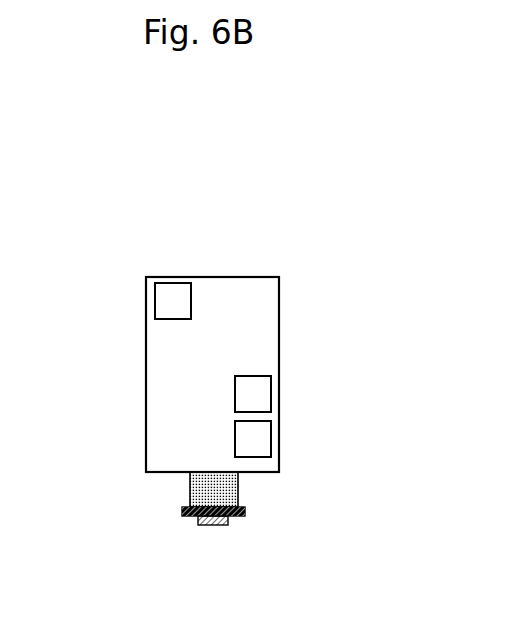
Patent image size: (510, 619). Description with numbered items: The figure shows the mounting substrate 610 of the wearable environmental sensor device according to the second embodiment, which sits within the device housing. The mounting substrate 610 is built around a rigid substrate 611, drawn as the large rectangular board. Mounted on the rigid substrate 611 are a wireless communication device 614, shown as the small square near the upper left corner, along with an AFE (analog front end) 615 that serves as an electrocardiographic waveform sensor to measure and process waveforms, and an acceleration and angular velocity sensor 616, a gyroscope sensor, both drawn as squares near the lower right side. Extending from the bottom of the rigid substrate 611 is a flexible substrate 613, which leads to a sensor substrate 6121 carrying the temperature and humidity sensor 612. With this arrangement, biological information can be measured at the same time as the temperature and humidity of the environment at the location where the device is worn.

The mounting substrate 610 is at (238, 155).
The rigid substrate 611 is at (267, 339).
The temperature and humidity sensor 612 is at (200, 520).
The sensor substrate 6121 is at (182, 512).
The flexible substrate 613 is at (190, 493).
The wireless communication device 614 is at (176, 287).
The AFE (analog front end) 615 is at (270, 442).
The acceleration and angular velocity sensor 616 is at (264, 397).